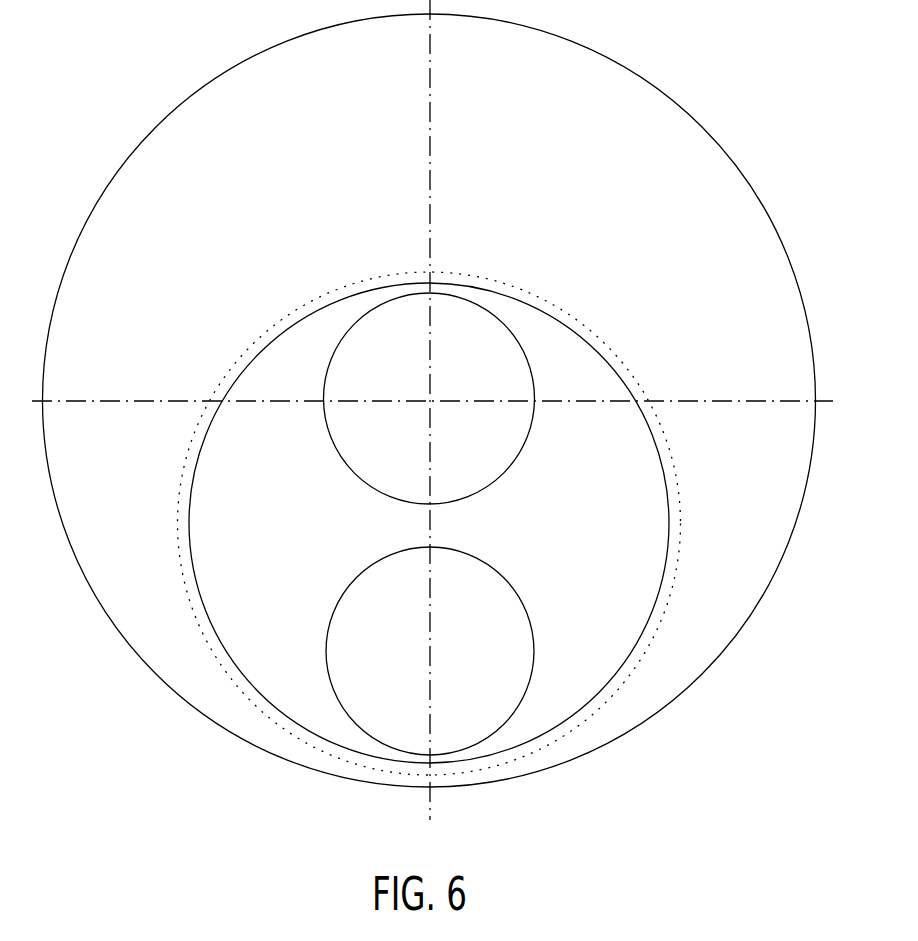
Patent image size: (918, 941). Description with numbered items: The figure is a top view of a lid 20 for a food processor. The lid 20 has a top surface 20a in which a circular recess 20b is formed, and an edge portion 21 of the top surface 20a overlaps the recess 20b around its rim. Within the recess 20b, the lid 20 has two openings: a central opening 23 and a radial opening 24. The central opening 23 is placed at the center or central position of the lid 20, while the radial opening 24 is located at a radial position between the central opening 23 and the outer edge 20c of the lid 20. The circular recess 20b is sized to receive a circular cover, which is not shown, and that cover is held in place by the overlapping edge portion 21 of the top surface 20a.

The lid 20 is at (622, 68).
The top surface 20a is at (545, 196).
The circular recess 20b is at (587, 518).
The edge 20c is at (435, 788).
The edge portion 21 is at (590, 345).
The central opening 23 is at (453, 435).
The radial opening 24 is at (463, 660).